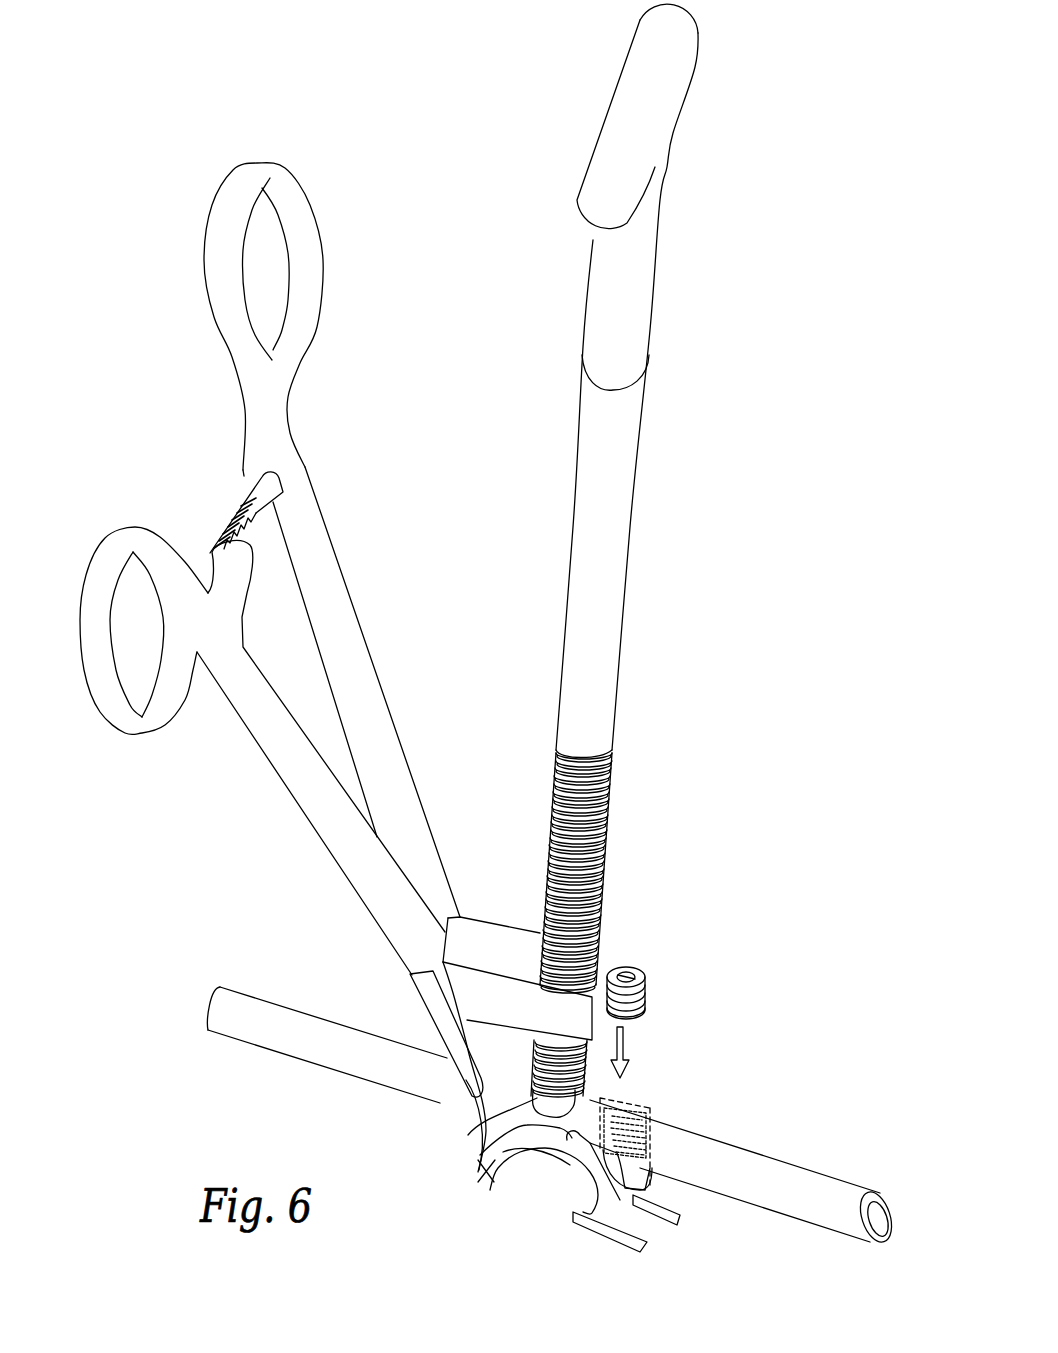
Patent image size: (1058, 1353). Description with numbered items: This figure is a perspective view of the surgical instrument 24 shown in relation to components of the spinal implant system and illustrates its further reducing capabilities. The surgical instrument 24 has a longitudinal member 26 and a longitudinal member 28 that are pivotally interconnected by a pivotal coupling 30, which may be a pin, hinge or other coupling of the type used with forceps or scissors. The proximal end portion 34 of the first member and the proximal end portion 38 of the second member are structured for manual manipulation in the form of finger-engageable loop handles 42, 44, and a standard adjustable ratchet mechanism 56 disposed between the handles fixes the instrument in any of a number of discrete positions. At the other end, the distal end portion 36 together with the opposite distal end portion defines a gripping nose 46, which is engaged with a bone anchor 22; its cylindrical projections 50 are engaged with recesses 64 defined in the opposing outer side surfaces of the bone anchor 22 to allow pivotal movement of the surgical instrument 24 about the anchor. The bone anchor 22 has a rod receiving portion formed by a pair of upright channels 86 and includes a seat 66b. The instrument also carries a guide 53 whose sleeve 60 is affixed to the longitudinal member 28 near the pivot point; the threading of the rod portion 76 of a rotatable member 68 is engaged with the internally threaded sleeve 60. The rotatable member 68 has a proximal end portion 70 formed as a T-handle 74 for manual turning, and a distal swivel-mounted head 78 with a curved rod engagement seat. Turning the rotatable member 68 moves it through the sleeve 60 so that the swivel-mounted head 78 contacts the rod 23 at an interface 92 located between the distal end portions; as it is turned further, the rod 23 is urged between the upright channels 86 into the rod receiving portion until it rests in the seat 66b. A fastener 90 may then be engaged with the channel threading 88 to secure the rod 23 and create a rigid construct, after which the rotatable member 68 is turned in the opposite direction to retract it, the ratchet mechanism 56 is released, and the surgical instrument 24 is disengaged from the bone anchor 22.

The bone anchor 22 is at (597, 1237).
The rod 23 is at (820, 1193).
The surgical instrument 24 is at (110, 347).
The longitudinal member 26 is at (290, 792).
The longitudinal member 28 is at (363, 628).
The pivotal coupling 30 is at (410, 992).
The proximal end portion 34 is at (115, 537).
The distal end portion 36 is at (635, 1103).
The proximal end portion 38 is at (268, 168).
The loop handle 42 is at (110, 724).
The loop handle 44 is at (312, 334).
The gripping nose 46 is at (493, 1188).
The cylindrical projections 50 is at (570, 1160).
The guide 53 is at (482, 912).
The ratchet mechanism 56 is at (233, 512).
The sleeve 60 is at (595, 984).
The recess 64 is at (650, 1120).
The seat 66b is at (638, 1240).
The rotatable member 68 is at (586, 498).
The proximal end portion 70 is at (662, 160).
The T-handle 74 is at (612, 105).
The rod portion 76 is at (612, 833).
The swivel-mounted head 78 is at (468, 1135).
The upright channels 86 is at (655, 1138).
The channel threading 88 is at (613, 1100).
The fastener 90 is at (648, 996).
The interface 92 is at (482, 1178).